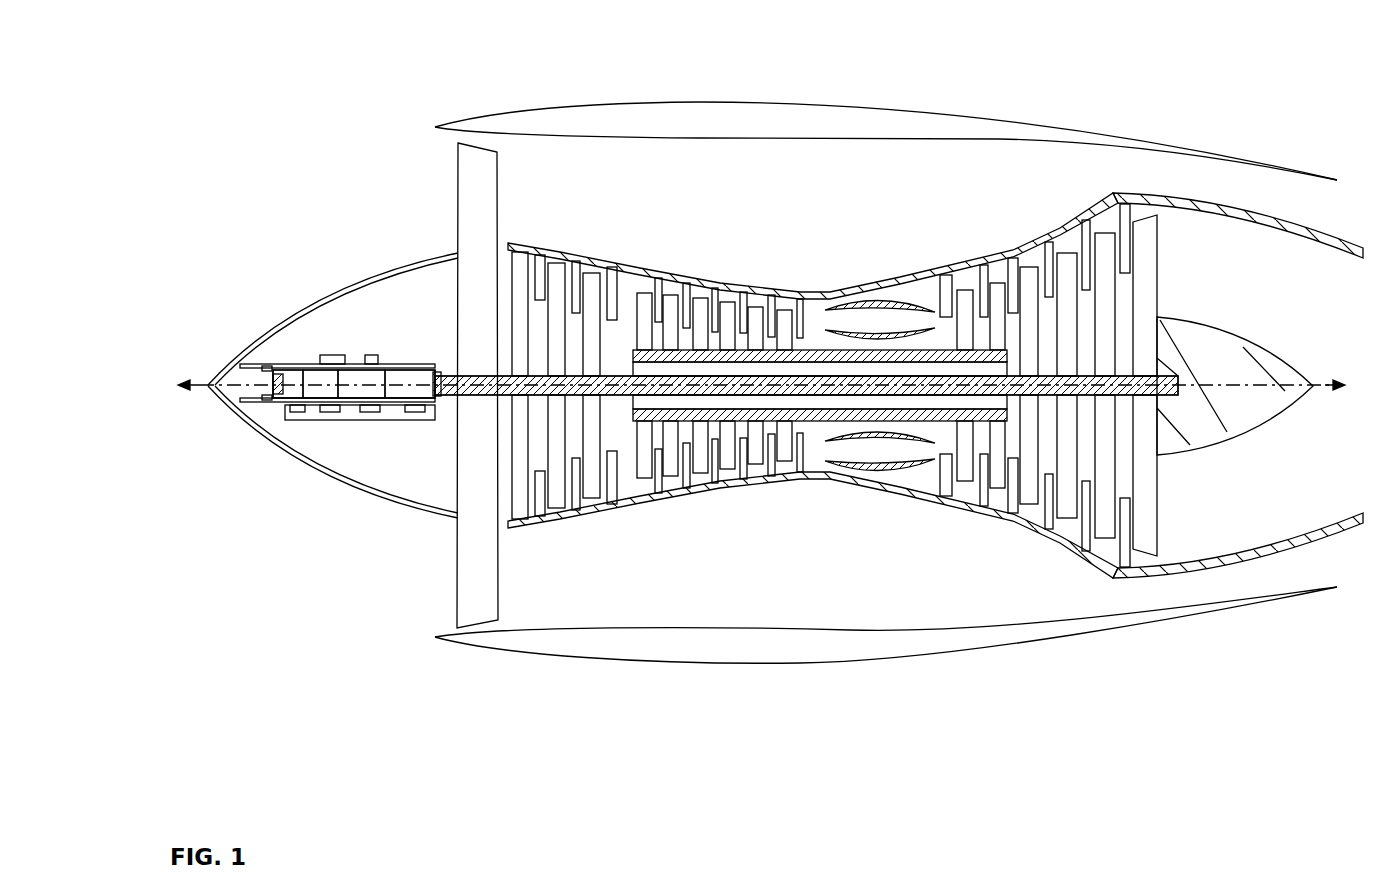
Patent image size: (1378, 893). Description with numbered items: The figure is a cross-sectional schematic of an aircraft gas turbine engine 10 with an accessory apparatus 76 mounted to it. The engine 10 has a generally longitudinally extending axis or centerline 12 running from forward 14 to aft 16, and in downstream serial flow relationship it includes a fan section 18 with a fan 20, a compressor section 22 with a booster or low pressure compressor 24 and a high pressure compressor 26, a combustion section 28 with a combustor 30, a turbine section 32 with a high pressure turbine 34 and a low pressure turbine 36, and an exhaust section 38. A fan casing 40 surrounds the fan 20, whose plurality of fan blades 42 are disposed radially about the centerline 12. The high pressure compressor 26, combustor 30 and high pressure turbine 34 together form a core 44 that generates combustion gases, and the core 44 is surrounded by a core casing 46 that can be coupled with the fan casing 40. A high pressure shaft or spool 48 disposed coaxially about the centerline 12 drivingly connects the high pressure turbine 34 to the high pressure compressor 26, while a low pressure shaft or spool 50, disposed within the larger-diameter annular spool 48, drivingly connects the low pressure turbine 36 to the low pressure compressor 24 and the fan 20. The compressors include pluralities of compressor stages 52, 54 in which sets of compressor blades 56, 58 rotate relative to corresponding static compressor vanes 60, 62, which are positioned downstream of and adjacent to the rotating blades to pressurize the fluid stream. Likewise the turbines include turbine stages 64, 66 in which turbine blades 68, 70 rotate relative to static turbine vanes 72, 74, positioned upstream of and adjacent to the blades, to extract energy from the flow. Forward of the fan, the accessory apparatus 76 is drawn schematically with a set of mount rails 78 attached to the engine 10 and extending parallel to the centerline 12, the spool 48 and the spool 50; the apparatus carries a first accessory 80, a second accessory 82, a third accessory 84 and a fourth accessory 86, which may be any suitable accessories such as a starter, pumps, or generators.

The gas turbine engine 10 is at (337, 56).
The centerline 12 is at (236, 380).
The forward 14 is at (171, 385).
The aft 16 is at (1351, 385).
The fan section 18 is at (502, 689).
The fan 20 is at (455, 197).
The compressor section 22 is at (806, 449).
The low pressure compressor 24 is at (623, 511).
The high pressure compressor 26 is at (733, 419).
The combustion section 28 is at (867, 464).
The combustor 30 is at (934, 300).
The turbine section 32 is at (1045, 401).
The high pressure turbine 34 is at (942, 513).
The low pressure turbine 36 is at (1056, 542).
The exhaust section 38 is at (1152, 689).
The fan casing 40 is at (541, 117).
The fan blades 42 is at (467, 575).
The core 44 is at (816, 400).
The core casing 46 is at (862, 292).
The HP shaft or spool 48 is at (820, 325).
The LP shaft or spool 50 is at (617, 373).
The compressor stages 52 is at (507, 220).
The compressor stages 54 is at (647, 256).
The compressor blades 56 is at (520, 246).
The compressor blades 58 is at (657, 318).
The static compressor vanes 60 is at (540, 288).
The static compressor vanes 62 is at (650, 345).
The turbine stages 64 is at (967, 258).
The turbine stages 66 is at (1081, 211).
The turbine blades 68 is at (998, 295).
The turbine blades 70 is at (1103, 242).
The static turbine vanes 72 is at (984, 295).
The static turbine vanes 74 is at (1086, 250).
The accessory apparatus 76 is at (311, 357).
The mount rails 78 is at (283, 425).
The first accessory 80 is at (406, 380).
The second accessory 82 is at (360, 376).
The third accessory 84 is at (325, 378).
The fourth accessory 86 is at (290, 372).